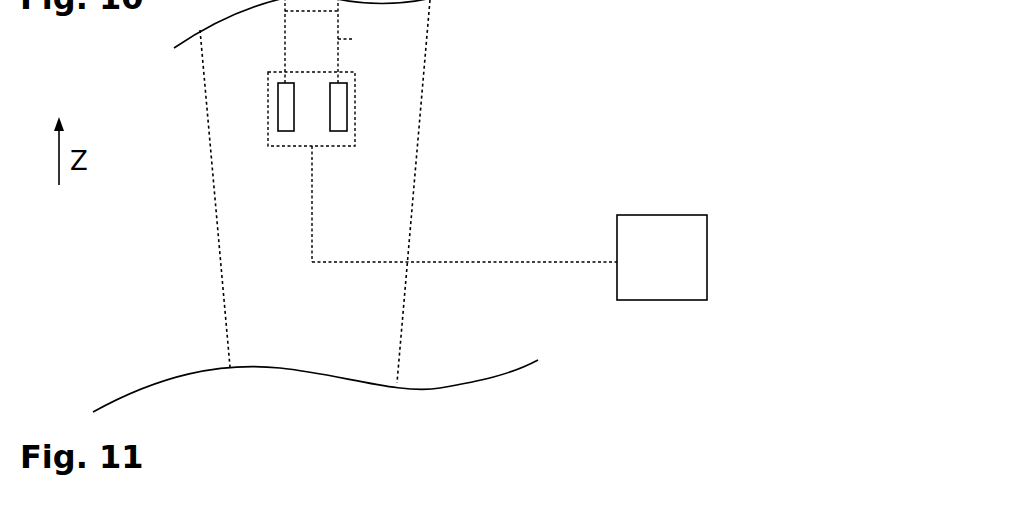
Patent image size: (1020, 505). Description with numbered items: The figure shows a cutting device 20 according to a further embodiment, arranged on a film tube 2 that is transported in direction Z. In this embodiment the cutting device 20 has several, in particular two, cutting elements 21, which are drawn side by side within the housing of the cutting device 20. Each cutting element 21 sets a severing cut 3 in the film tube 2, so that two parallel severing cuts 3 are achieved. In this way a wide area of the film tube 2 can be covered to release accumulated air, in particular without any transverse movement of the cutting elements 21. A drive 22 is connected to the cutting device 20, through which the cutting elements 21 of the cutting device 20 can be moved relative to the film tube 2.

The film tube 2 is at (360, 277).
The severing cut 3 is at (338, 11).
The cutting device 20 is at (290, 149).
The cutting element 21 is at (287, 113).
The drive 22 is at (509, 257).